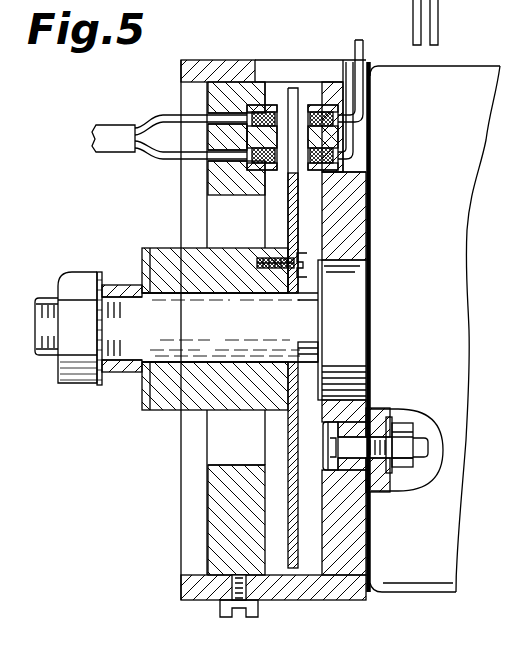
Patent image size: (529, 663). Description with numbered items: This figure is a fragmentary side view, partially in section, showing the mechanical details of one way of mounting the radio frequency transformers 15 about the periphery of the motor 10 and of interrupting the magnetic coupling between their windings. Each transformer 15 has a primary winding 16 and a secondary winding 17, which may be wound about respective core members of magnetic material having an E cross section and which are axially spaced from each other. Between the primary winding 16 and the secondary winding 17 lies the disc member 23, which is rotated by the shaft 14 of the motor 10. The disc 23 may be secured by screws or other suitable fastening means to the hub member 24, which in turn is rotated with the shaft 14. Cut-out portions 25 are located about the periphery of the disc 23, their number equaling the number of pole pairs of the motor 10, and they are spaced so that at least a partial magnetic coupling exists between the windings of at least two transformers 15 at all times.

The motor 10 is at (477, 137).
The shaft 14 is at (283, 329).
The radio frequency transformer 15 is at (288, 123).
The primary winding 16 is at (282, 170).
The secondary winding 17 is at (308, 170).
The disc member 23 is at (300, 557).
The hub member 24 is at (173, 394).
The cut-out portions 25 is at (292, 180).